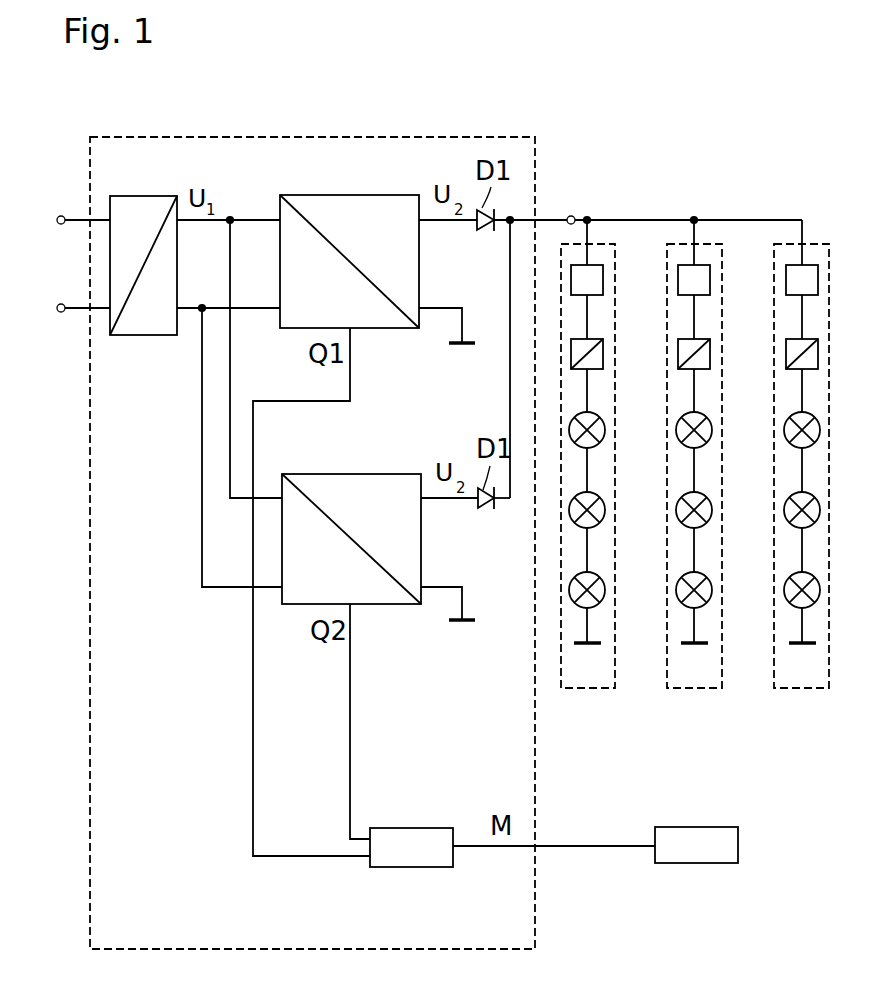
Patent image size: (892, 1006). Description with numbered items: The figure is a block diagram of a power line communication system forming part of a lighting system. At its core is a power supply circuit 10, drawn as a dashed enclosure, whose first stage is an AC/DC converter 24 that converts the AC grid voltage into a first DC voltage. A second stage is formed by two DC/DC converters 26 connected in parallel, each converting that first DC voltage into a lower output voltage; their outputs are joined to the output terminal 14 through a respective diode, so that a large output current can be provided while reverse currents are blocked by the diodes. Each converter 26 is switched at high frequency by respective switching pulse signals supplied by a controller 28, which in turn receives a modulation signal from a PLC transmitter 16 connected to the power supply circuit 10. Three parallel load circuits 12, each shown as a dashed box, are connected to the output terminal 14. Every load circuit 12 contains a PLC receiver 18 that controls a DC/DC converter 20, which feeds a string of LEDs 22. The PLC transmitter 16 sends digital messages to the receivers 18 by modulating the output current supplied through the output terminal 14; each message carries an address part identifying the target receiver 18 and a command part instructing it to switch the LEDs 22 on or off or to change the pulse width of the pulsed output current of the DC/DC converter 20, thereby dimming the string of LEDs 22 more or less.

The power supply circuit 10 is at (310, 137).
The load circuit 12 is at (694, 496).
The output terminal 14 is at (571, 213).
The PLC transmitter 16 is at (697, 863).
The PLC receiver 18 is at (786, 283).
The DC/DC converter 20 is at (786, 347).
The string of LEDs 22 is at (785, 428).
The AC/DC converter 24 is at (147, 336).
The DC/DC converter 26 is at (393, 330).
The controller 28 is at (412, 828).